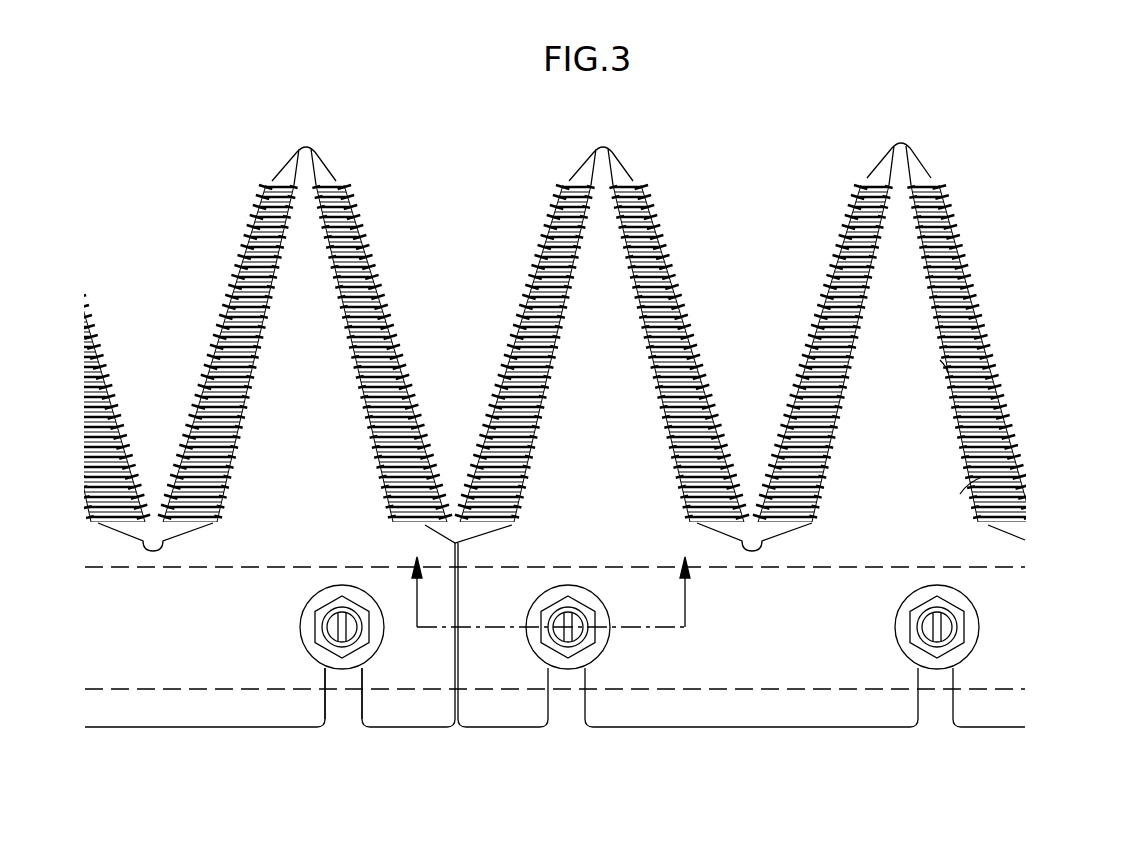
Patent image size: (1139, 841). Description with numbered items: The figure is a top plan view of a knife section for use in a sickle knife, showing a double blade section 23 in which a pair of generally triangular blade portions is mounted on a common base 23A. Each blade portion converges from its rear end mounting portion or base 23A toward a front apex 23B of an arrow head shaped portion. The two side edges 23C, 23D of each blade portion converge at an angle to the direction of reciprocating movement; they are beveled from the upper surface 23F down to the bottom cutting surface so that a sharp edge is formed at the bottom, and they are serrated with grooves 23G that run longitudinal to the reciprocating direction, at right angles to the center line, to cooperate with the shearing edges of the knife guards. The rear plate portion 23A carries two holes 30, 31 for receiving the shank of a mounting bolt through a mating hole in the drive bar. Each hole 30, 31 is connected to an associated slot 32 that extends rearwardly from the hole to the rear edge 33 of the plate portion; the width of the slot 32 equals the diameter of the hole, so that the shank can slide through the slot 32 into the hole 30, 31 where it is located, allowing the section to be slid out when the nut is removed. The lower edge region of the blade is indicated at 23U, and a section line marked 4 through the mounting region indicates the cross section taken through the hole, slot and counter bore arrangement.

The blade section 23 is at (200, 292).
The front apex 23B is at (344, 156).
The upper surface 23F is at (390, 326).
The side edge 23C is at (836, 296).
The side edge 23D is at (973, 284).
The base 23A is at (990, 347).
The grooves 23G is at (995, 393).
The lower blade edge 23U is at (1008, 456).
The hole 30 is at (595, 642).
The hole 31 is at (303, 612).
The slot 32 is at (322, 668).
The rear edge 33 is at (862, 728).
The section line 4- 4 is at (546, 576).